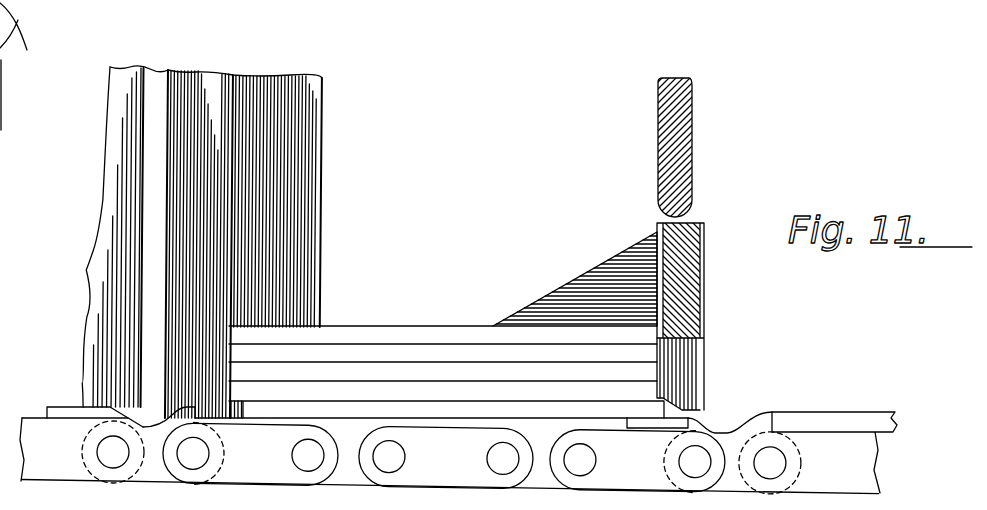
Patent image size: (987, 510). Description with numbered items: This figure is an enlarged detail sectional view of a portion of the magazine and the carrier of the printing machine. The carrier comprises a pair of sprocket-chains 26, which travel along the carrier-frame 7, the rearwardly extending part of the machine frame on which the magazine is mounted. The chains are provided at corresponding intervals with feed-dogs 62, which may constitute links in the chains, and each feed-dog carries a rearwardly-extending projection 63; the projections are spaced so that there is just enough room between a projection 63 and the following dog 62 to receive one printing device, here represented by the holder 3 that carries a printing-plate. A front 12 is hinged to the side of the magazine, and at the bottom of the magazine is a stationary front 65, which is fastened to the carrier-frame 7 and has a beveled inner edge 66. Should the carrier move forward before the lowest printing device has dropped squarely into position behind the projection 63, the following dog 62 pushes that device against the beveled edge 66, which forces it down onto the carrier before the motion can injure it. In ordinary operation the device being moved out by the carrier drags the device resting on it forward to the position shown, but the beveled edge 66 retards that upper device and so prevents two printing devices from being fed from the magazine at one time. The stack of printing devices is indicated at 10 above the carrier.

The stack of sheets 10 is at (156, 77).
The front 12 is at (693, 98).
The carrier-frame 7 is at (403, 328).
The stationary front 65 is at (701, 348).
The beveled inner edge 66 is at (680, 402).
The feed-dog 62 is at (183, 412).
The rearwardly-extending projection 63 is at (52, 407).
The holder 3 is at (871, 413).
The sprocket-chain 26 is at (450, 457).